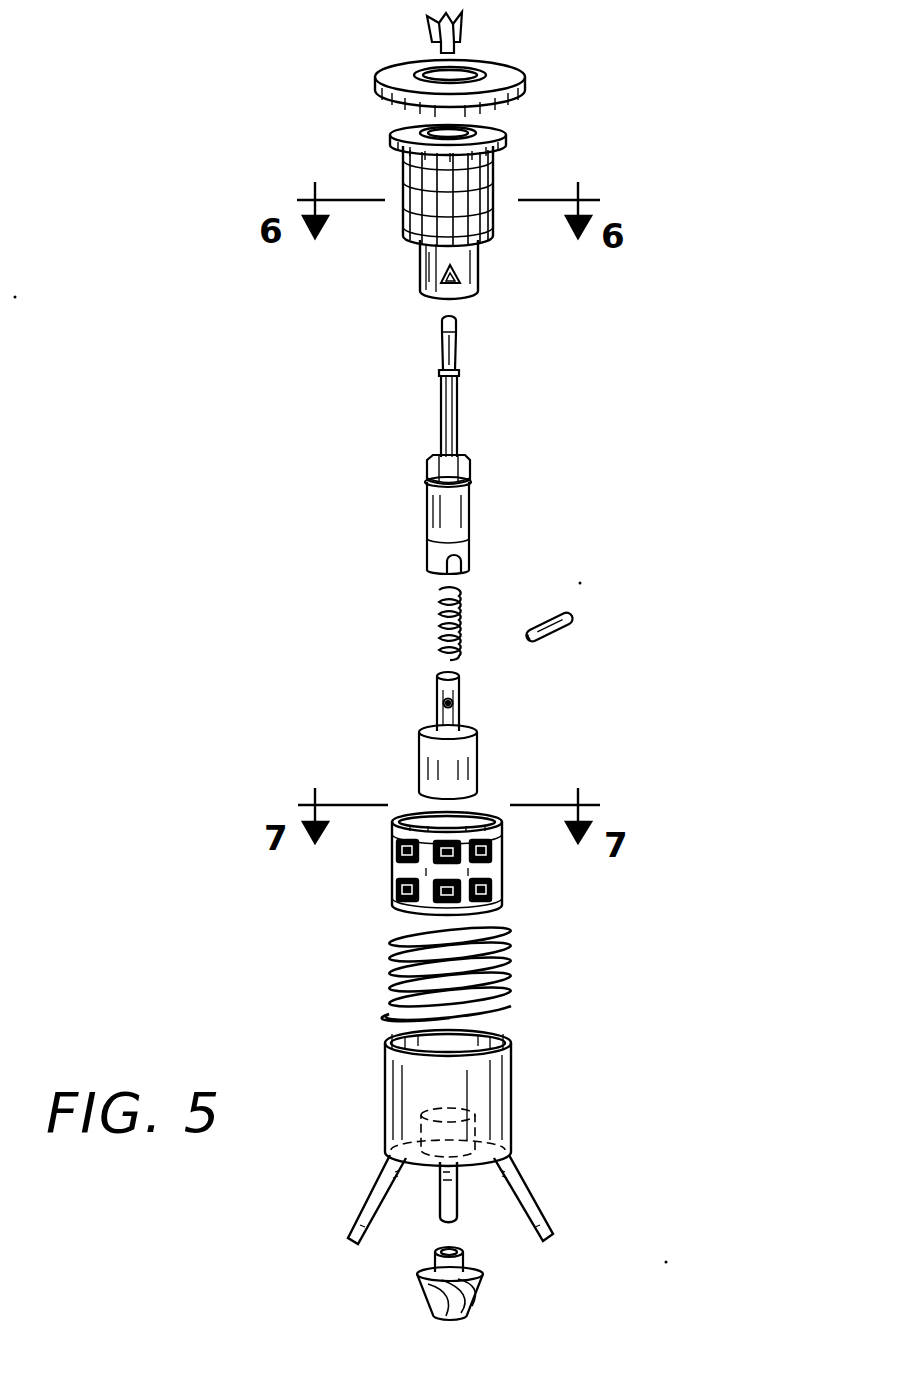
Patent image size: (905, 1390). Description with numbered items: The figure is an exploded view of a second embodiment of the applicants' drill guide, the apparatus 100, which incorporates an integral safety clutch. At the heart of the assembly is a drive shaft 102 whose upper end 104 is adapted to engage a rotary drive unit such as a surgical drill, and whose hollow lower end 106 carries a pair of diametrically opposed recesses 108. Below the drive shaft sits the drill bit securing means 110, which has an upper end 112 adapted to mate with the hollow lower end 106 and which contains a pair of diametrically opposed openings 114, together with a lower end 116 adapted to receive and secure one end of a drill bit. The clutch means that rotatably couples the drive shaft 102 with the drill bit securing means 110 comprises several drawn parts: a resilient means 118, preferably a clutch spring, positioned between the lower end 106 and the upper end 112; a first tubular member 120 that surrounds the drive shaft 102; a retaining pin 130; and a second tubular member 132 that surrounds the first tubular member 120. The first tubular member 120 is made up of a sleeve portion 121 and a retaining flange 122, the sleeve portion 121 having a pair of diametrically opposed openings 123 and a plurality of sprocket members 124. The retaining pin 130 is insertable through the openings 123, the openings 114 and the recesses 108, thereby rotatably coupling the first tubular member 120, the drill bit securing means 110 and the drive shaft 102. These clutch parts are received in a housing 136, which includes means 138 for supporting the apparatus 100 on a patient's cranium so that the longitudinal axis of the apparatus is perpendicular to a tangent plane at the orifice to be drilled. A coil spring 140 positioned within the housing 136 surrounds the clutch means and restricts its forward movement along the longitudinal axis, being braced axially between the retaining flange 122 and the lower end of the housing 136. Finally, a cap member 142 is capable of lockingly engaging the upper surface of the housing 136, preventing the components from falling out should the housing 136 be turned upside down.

The drill guide apparatus 100 is at (292, 386).
The drive shaft 102 is at (494, 400).
The upper end of drive shaft 104 is at (462, 328).
The hollow lower end of drive shaft 106 is at (437, 546).
The recesses 108 is at (455, 566).
The drill bit securing means 110 is at (462, 737).
The upper end of drill bit securing means 112 is at (461, 690).
The openings 114 is at (436, 705).
The lower end of drill bit securing means 116 is at (470, 797).
The resilient means 118 is at (438, 642).
The first tubular member 120 is at (455, 279).
The sleeve portion 121 is at (466, 257).
The retaining flange 122 is at (488, 132).
The openings of first tubular member 123 is at (442, 284).
The sprocket members 124 is at (403, 185).
The retaining pin 130 is at (560, 628).
The second tubular member 132 is at (502, 866).
The housing 136 is at (476, 1137).
The supporting means 138 is at (535, 1204).
The coil spring 140 is at (500, 938).
The cap member 142 is at (505, 74).